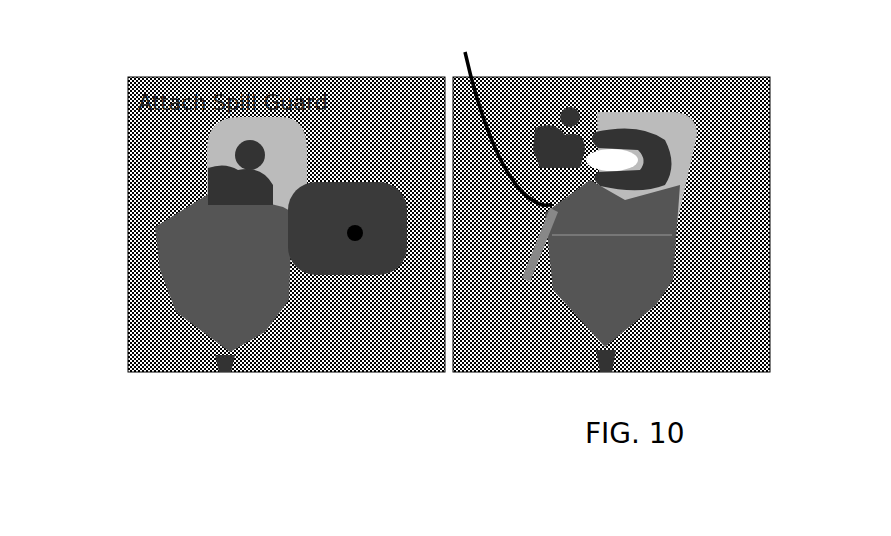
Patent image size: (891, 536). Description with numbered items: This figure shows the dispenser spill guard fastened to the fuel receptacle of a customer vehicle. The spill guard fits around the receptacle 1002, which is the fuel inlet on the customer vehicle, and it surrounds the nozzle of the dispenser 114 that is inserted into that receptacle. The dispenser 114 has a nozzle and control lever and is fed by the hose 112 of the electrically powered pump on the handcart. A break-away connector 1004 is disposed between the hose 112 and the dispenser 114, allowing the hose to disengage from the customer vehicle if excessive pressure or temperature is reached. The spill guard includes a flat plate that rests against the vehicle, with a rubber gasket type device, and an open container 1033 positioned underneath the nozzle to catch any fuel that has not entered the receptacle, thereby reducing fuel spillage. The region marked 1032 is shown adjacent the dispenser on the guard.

The receptacle 1002 is at (229, 152).
The break-away connector 1004 is at (496, 113).
The dispenser 114 is at (598, 147).
The spill guard attachment region 1032 is at (675, 130).
The open container 1033 is at (638, 243).
The hose 112 is at (531, 244).